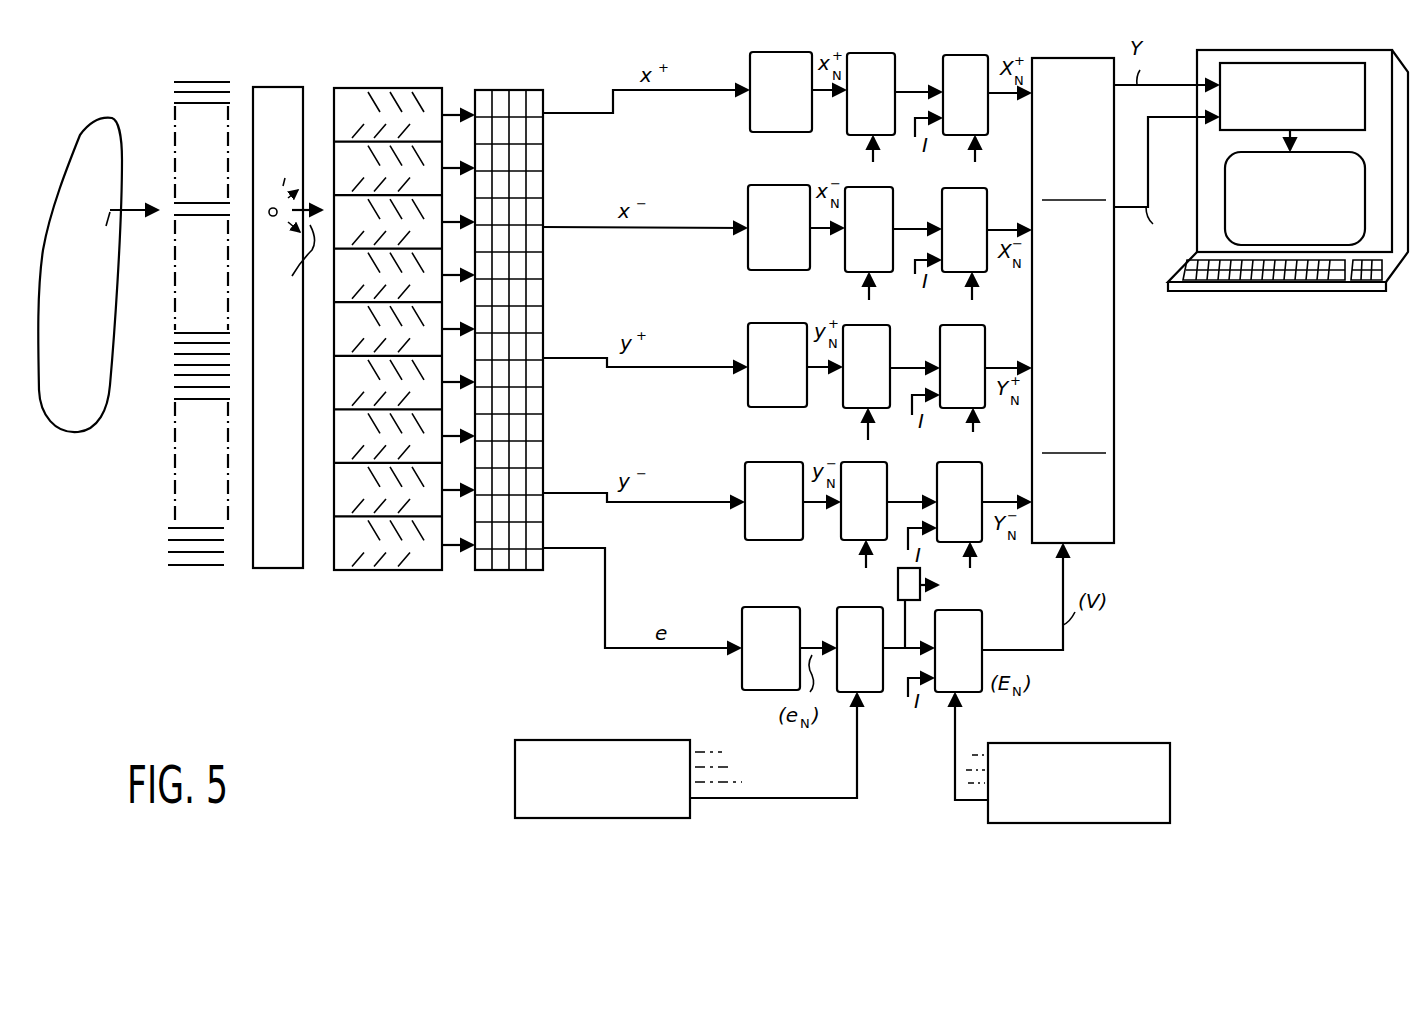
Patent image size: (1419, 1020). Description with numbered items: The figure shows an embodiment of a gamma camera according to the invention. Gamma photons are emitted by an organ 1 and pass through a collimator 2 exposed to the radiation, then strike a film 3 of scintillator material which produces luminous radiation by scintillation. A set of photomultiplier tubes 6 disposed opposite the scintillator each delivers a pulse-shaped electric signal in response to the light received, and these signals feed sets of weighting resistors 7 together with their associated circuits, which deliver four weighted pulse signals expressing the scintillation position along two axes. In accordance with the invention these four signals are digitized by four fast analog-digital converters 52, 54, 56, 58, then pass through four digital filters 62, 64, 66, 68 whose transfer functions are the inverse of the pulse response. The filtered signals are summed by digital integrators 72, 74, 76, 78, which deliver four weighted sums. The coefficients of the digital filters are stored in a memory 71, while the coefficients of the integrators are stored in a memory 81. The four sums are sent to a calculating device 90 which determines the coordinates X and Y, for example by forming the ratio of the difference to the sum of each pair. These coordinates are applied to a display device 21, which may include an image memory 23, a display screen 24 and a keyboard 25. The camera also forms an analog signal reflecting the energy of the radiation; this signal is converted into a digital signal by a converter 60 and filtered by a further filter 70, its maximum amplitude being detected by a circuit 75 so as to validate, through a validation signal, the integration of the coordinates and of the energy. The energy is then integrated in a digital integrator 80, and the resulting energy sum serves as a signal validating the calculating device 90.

The organ 1 is at (82, 440).
The collimator 2 is at (200, 575).
The film of scintillator material 3 is at (273, 578).
The photomultiplier tubes 6 is at (377, 583).
The sets of weighting resistors 7 is at (490, 580).
The display device 21 is at (1288, 192).
The image memory 23 is at (1292, 96).
The display screen 24 is at (1295, 198).
The keyboard 25 is at (1265, 270).
The fast analog-digital converter 52 is at (806, 52).
The fast analog-digital converter 54 is at (804, 185).
The fast analog-digital converter 56 is at (802, 323).
The fast analog-digital converter 58 is at (799, 462).
The converter 60 is at (765, 607).
The digital filter 62 is at (868, 53).
The digital filter 64 is at (886, 180).
The digital filter 66 is at (866, 325).
The digital filter 68 is at (862, 462).
The digital filter for energy signal 70 is at (846, 607).
The memory 71 is at (686, 756).
The digital integrator 72 is at (972, 44).
The digital integrator 74 is at (987, 222).
The maximum amplitude detection circuit 75 is at (898, 600).
The digital integrator 76 is at (985, 356).
The digital integrator 78 is at (982, 494).
The digital integrator 80 is at (982, 640).
The memory 81 is at (1062, 758).
The calculating device 90 is at (1114, 530).